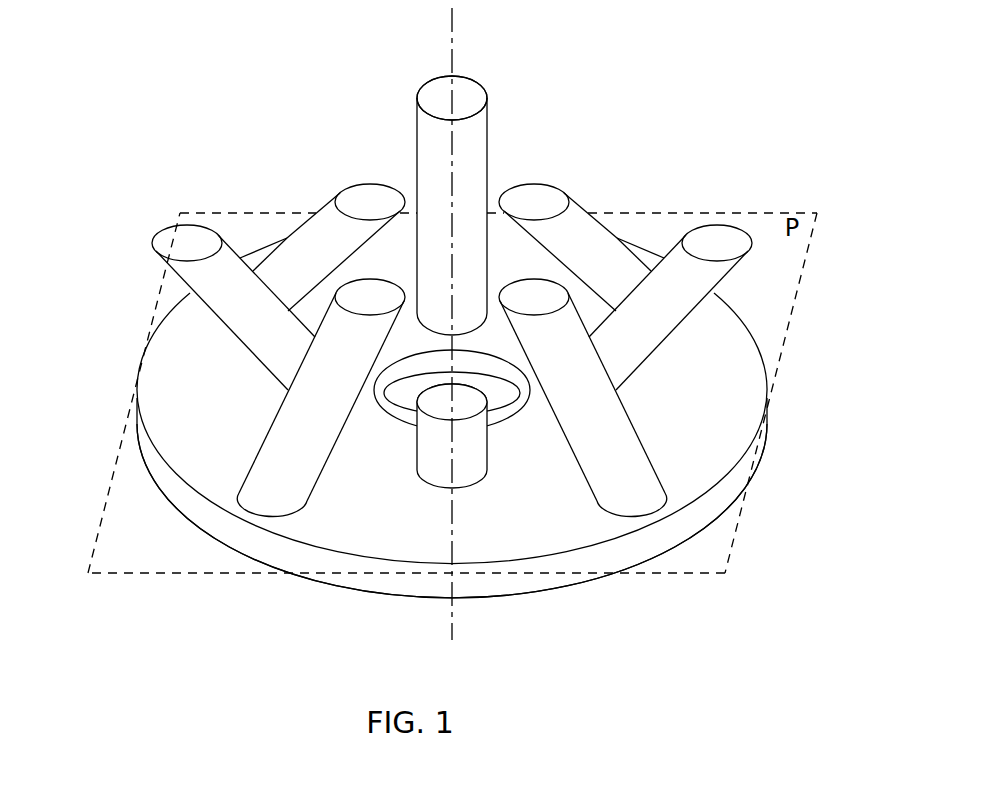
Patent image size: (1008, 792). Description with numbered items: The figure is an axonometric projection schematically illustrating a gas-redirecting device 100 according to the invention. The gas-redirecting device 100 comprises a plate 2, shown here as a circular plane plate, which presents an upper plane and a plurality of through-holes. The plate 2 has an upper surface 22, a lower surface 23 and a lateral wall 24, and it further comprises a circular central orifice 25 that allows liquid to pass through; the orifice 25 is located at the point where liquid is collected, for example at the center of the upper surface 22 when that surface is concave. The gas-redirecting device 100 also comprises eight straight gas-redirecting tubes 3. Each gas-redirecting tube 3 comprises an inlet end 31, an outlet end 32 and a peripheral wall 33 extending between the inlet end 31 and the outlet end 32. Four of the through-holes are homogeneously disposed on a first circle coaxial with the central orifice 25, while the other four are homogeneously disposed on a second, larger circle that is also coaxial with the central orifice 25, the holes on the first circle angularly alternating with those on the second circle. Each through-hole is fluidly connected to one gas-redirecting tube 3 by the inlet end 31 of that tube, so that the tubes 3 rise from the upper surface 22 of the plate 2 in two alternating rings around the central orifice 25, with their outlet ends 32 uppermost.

The gas-redirecting device 100 is at (56, 124).
The plate 2 is at (168, 403).
The upper surface 22 is at (715, 437).
The lower surface 23 is at (686, 542).
The lateral wall 24 is at (265, 535).
The orifice 25 is at (400, 411).
The gas-redirecting tube 3 is at (492, 132).
The inlet end 31 is at (633, 527).
The outlet end 32 is at (451, 89).
The peripheral wall 33 is at (578, 233).